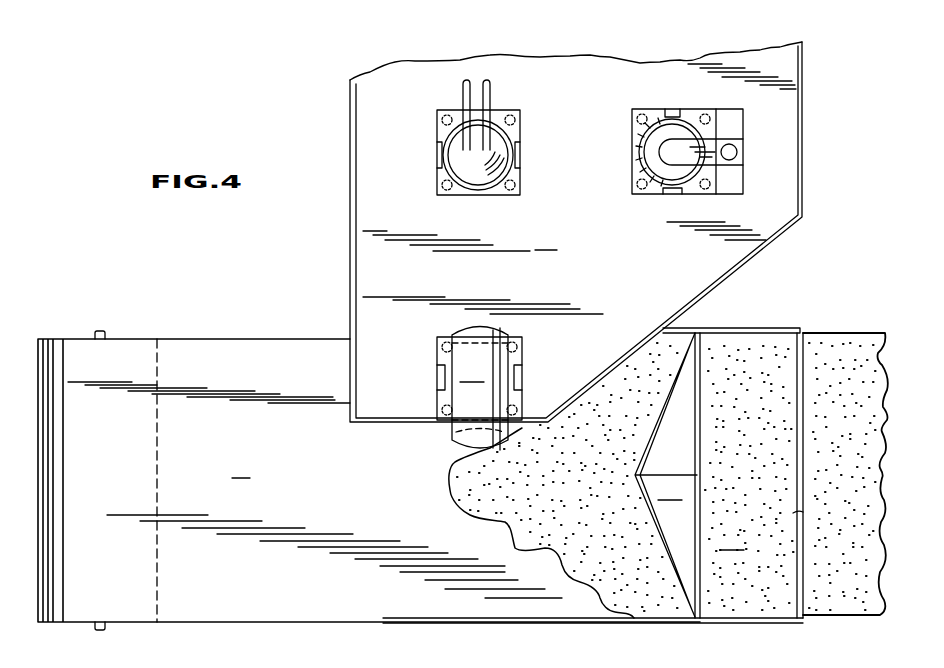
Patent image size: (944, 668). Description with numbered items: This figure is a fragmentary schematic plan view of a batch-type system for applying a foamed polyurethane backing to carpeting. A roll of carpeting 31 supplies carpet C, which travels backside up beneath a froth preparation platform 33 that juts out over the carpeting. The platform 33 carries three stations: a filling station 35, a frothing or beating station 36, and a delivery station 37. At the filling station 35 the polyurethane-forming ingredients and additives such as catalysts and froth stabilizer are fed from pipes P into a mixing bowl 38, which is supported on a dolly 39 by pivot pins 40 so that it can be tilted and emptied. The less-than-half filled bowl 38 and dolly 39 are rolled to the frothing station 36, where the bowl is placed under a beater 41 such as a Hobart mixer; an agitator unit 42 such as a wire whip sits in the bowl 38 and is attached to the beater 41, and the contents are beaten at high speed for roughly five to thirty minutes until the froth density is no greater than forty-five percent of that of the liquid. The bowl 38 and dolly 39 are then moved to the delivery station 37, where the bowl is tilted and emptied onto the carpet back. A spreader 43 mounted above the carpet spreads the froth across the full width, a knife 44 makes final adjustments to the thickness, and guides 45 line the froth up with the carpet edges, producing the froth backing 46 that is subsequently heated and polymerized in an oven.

The roll of carpeting 31 is at (94, 339).
The froth preparation platform 33 is at (576, 232).
The filling station 35 is at (436, 155).
The frothing station 36 is at (631, 152).
The delivery station 37 is at (523, 343).
The mixing bowl 38 is at (478, 192).
The dolly 39 is at (520, 118).
The pivot pins 40 is at (440, 379).
The beater 41 is at (746, 155).
The agitator unit 42 is at (664, 118).
The spreader 43 is at (666, 475).
The knife 44 is at (828, 474).
The guides 45 is at (737, 328).
The froth backing 46 is at (749, 475).
The pipes P is at (463, 95).